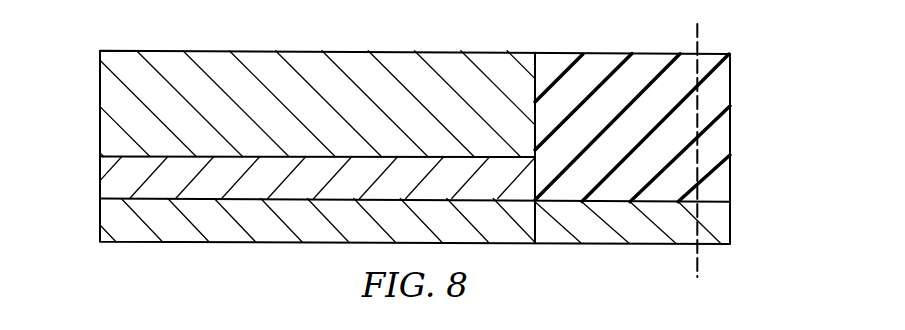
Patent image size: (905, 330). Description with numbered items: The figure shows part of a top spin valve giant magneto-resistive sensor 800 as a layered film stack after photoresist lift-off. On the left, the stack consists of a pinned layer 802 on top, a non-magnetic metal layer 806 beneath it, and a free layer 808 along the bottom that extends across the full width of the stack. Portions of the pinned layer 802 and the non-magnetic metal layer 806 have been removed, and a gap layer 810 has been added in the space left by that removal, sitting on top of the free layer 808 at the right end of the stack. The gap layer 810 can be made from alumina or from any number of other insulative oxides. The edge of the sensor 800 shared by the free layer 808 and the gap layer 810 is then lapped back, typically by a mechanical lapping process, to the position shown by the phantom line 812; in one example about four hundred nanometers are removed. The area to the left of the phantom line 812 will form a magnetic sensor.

The top spin valve giant magneto-resistive sensor 800 is at (753, 84).
The pinned layer 802 is at (100, 105).
The non-magnetic metal layer 806 is at (100, 180).
The free layer 808 is at (100, 217).
The gap layer 810 is at (730, 142).
The phantom line 812 is at (698, 30).